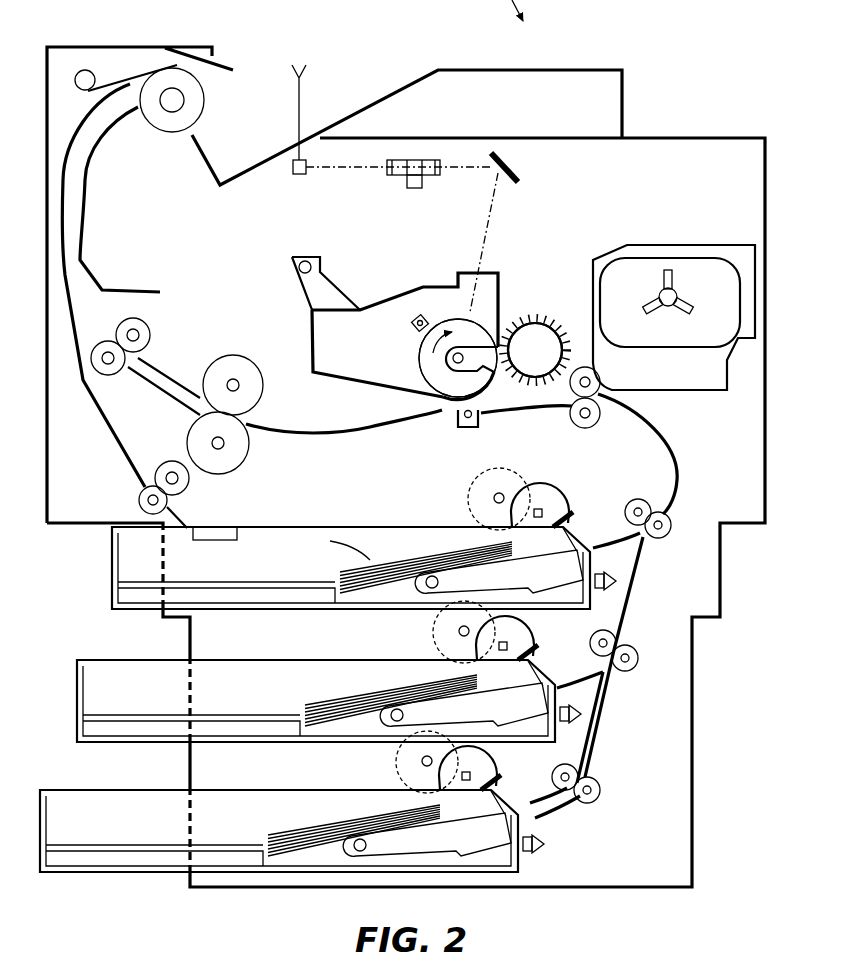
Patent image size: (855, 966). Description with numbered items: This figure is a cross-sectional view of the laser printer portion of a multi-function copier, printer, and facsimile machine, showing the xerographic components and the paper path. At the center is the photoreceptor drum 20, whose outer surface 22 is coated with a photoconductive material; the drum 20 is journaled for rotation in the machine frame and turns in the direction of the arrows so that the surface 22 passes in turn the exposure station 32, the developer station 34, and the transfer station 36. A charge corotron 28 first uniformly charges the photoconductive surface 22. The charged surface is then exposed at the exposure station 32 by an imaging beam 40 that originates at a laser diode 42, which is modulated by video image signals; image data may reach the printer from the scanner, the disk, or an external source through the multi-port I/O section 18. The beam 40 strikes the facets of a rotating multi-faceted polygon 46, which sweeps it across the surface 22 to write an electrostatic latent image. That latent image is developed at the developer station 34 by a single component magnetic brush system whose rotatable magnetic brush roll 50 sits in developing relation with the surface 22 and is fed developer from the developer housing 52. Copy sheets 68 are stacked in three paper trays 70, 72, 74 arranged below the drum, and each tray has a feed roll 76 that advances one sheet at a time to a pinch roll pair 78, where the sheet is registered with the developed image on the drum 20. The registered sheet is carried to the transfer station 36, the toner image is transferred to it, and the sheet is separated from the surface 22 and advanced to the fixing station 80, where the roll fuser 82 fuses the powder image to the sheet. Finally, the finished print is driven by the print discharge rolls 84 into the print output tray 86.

The multi-port I/O section 18 is at (748, 527).
The photoreceptor drum 20 is at (416, 366).
The outer surface 22 is at (425, 352).
The charge corotron 28 is at (414, 318).
The exposure station 32 is at (500, 284).
The developer station 34 is at (500, 328).
The transfer station 36 is at (445, 404).
The imaging beam 40 is at (483, 168).
The laser diode 42 is at (297, 176).
The rotating multi-faceted polygon 46 is at (397, 176).
The magnetic brush roll 50 is at (530, 380).
The developer housing 52 is at (723, 396).
The copy sheets 68 is at (378, 557).
The paper tray 70 is at (615, 595).
The paper tray 72 is at (570, 703).
The paper tray 74 is at (548, 837).
The feed roll 76 is at (533, 628).
The pinch roll pair 78 is at (581, 431).
The fixing station 80 is at (210, 350).
The roll fuser 82 is at (242, 469).
The print discharge rolls 84 is at (108, 376).
The print output tray 86 is at (256, 124).